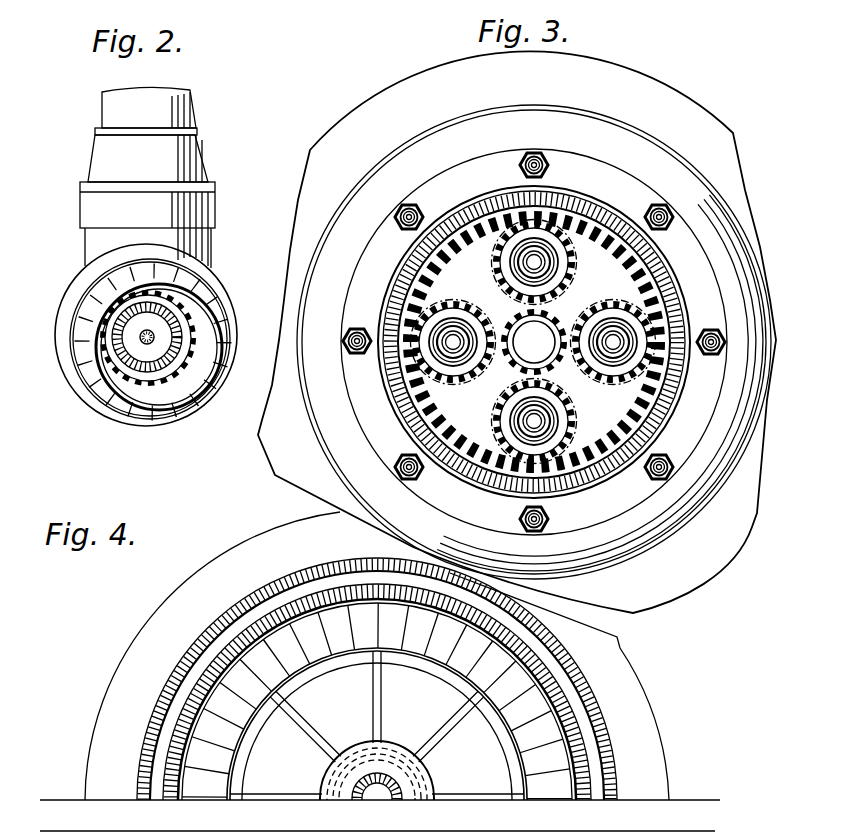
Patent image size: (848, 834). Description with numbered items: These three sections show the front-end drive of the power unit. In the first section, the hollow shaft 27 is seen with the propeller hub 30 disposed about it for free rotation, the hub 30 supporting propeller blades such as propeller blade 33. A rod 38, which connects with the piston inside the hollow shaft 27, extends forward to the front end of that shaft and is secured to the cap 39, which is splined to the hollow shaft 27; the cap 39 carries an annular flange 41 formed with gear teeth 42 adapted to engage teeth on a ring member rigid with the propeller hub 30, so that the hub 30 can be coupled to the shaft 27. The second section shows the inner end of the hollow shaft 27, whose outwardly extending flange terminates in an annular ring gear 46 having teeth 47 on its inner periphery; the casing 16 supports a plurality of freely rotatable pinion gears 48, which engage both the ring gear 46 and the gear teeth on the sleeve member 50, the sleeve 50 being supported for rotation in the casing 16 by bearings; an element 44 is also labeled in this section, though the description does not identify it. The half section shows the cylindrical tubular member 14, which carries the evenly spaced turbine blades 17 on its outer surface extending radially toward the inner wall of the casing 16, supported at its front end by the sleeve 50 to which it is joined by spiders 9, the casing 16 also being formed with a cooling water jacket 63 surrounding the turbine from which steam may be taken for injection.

In FIG. 2, the propeller blade 33 is at (118, 104).
In FIG. 2, the propeller hub 30 is at (88, 238).
In FIG. 2, the cap member 39 is at (113, 380).
In FIG. 2, the gear teeth 42 is at (210, 323).
In FIG. 2, the annular flange 41 is at (223, 350).
In FIG. 2, the hollow shaft 27 is at (110, 358).
In FIG. 2, the rod 38 is at (133, 337).
In FIG. 3, the annular ring gear 46 is at (562, 218).
In FIG. 3, the teeth 47 is at (582, 213).
In FIG. 3, the pinion gears 48 is at (433, 310).
In FIG. 3, the planet gear 44 is at (483, 398).
In FIG. 4, the sleeve member 50 is at (407, 767).
In FIG. 3, the sleeve member 50 is at (566, 314).
In FIG. 4, the cooling water jacket 63 is at (157, 753).
In FIG. 4, the casing 16 is at (249, 598).
In FIG. 4, the cylindrical tubular member 14 is at (517, 670).
In FIG. 4, the turbine blades 17 is at (527, 703).
In FIG. 4, the spiders 9 is at (377, 692).